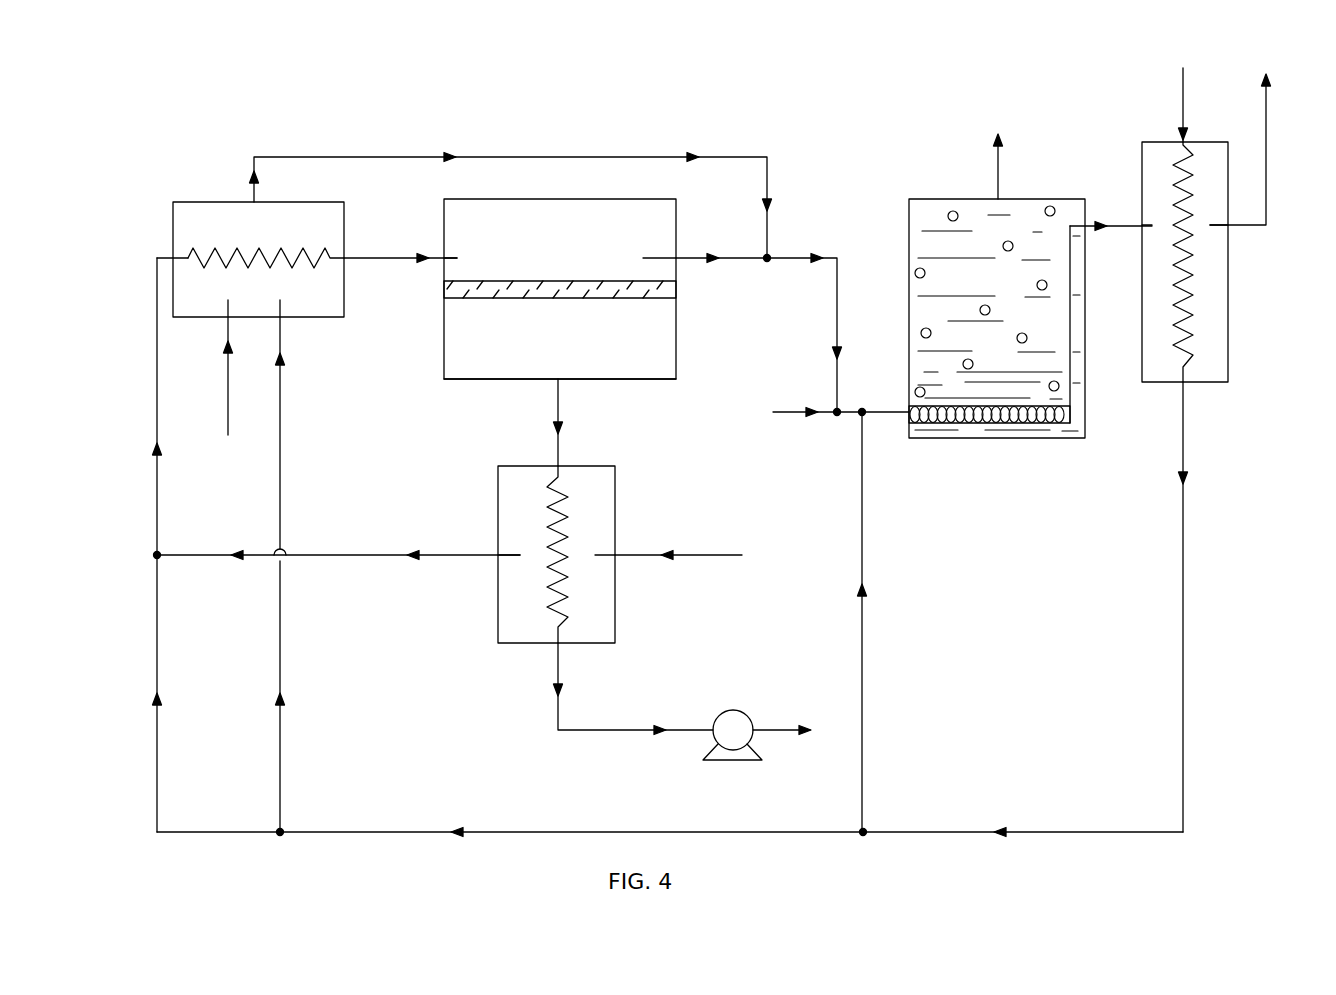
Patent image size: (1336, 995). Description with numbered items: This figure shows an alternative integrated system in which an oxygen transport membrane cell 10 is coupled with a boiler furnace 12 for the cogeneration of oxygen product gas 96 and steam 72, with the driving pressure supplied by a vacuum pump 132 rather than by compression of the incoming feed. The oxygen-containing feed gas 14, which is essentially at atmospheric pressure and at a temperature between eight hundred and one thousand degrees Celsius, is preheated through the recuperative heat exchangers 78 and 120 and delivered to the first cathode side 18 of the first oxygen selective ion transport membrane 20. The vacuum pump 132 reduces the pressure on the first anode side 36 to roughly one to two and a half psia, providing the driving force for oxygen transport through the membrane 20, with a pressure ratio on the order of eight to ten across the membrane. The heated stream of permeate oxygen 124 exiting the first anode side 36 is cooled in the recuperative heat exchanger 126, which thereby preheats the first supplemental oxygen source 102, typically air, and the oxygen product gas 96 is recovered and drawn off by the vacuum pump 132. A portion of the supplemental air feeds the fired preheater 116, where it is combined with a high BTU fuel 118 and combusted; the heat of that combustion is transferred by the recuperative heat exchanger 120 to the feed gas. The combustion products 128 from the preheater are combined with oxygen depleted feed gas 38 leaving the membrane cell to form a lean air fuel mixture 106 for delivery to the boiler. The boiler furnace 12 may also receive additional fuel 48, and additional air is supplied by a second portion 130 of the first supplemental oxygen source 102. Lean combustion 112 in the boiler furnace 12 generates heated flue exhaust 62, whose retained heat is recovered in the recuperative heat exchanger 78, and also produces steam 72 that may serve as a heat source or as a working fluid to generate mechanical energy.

The oxygen transport membrane cell 10 is at (583, 191).
The boiler furnace 12 is at (897, 214).
The oxygen-containing feed gas 14 is at (1185, 83).
The first cathode side 18 is at (498, 220).
The first oxygen selective ion transport membrane 20 is at (676, 285).
The first anode side 36 is at (678, 345).
The oxygen depleted feed gas 38 is at (730, 258).
The additional fuel 48 is at (784, 412).
The flue exhaust 62 is at (1125, 226).
The steam 72 is at (999, 165).
The recuperative heat exchanger 78 is at (1190, 262).
The oxygen product gas 96 is at (683, 730).
The first supplemental oxygen source 102 is at (728, 555).
The lean air fuel mixture 106 is at (788, 258).
The lean combustion 112 is at (990, 414).
The fired preheater 116 is at (205, 199).
The high BTU fuel 118 is at (228, 398).
The recuperative heat exchanger 120 is at (285, 248).
The heated stream of oxygen 124 is at (560, 400).
The recuperative heat exchanger 126 is at (562, 602).
The combustion products 128 is at (545, 157).
The second portion of the first supplemental oxygen source 130 is at (863, 618).
The vacuum pump 132 is at (738, 722).